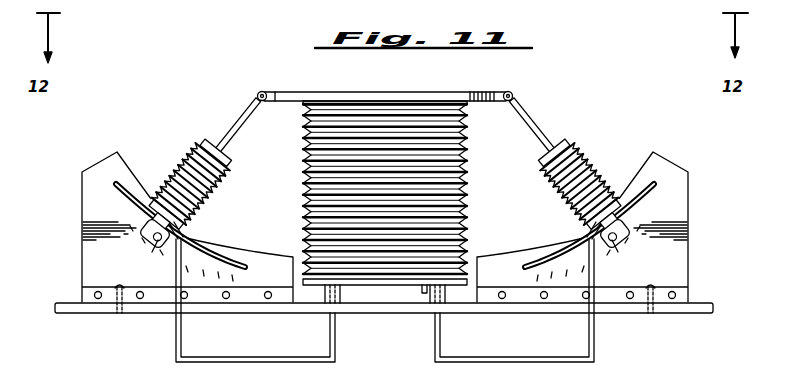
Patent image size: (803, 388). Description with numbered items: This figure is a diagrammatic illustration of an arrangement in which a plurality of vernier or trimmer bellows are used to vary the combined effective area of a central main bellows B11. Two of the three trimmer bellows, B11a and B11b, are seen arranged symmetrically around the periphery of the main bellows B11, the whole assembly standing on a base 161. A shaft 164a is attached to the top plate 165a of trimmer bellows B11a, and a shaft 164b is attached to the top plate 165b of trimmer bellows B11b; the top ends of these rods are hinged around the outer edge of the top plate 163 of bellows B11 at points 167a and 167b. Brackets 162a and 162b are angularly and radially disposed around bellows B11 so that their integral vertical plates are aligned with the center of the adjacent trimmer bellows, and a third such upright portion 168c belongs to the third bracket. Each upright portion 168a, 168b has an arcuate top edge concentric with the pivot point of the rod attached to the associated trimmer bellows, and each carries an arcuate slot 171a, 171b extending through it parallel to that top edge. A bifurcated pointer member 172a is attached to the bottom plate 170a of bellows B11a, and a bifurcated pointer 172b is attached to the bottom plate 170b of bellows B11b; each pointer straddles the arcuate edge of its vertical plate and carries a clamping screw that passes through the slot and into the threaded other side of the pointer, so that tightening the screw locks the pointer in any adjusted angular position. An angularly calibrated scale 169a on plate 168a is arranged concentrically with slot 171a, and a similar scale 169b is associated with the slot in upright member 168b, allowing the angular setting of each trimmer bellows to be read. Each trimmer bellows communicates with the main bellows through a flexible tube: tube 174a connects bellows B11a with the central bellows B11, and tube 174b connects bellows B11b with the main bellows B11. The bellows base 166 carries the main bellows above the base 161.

The base plate 161 is at (412, 313).
The bracket 162a is at (86, 298).
The bracket 162b is at (637, 303).
The top plate 163 is at (375, 92).
The shaft 164a is at (239, 123).
The shaft 164b is at (526, 114).
The top plate 165a is at (198, 157).
The top plate 165b is at (550, 178).
The bellows base 166 is at (376, 285).
The hinge point 167a is at (259, 91).
The hinge point 167b is at (516, 92).
The upright portion 168a is at (82, 246).
The upright portion 168b is at (690, 266).
The upright portion 168c is at (443, 380).
The angularly calibrated scale 169a is at (118, 209).
The angularly calibrated scale 169b is at (650, 213).
The bottom plate 170a is at (160, 212).
The bottom plate 170b is at (610, 204).
The arcuate slot 171a is at (210, 262).
The arcuate slot 171b is at (655, 192).
The bifurcated pointer member 172a is at (160, 224).
The bifurcated pointer 172b is at (630, 233).
The flexible tube 174a is at (176, 359).
The flexible tube 174b is at (596, 361).
The main bellows B11 is at (467, 182).
The trimmer bellows B11a is at (183, 166).
The trimmer bellows B11b is at (583, 167).